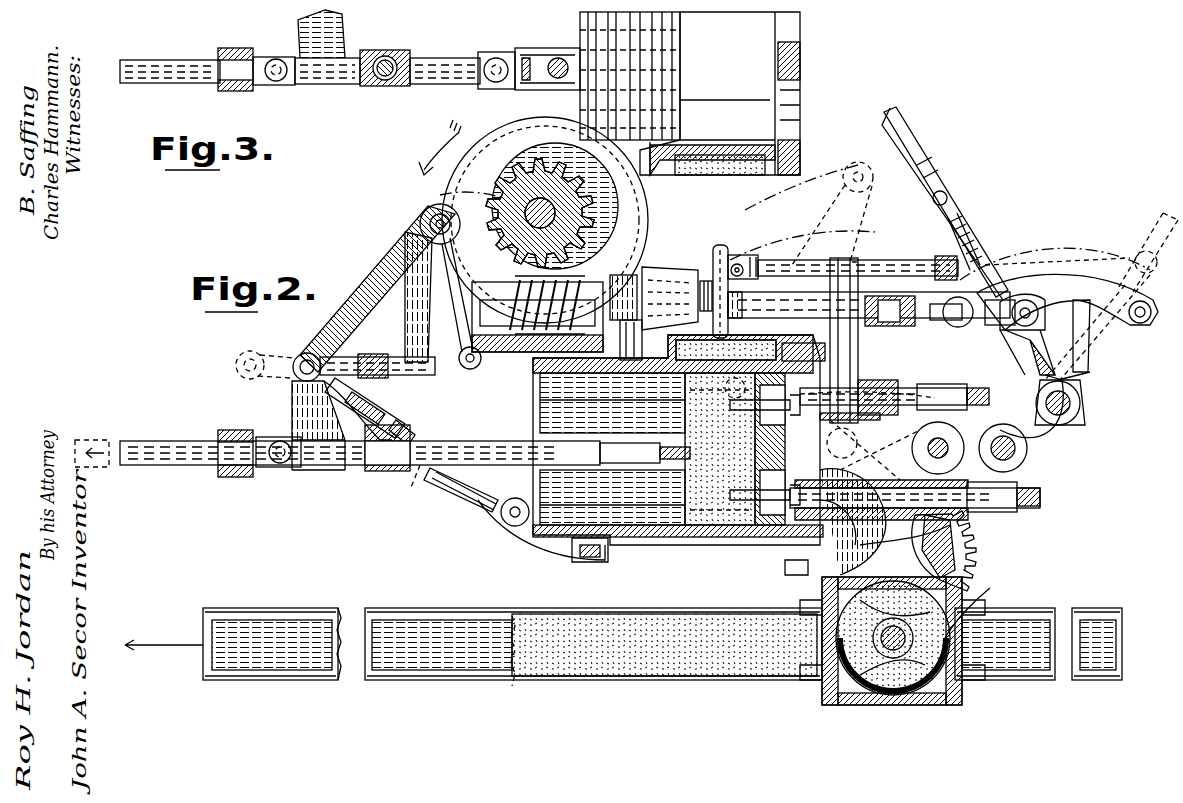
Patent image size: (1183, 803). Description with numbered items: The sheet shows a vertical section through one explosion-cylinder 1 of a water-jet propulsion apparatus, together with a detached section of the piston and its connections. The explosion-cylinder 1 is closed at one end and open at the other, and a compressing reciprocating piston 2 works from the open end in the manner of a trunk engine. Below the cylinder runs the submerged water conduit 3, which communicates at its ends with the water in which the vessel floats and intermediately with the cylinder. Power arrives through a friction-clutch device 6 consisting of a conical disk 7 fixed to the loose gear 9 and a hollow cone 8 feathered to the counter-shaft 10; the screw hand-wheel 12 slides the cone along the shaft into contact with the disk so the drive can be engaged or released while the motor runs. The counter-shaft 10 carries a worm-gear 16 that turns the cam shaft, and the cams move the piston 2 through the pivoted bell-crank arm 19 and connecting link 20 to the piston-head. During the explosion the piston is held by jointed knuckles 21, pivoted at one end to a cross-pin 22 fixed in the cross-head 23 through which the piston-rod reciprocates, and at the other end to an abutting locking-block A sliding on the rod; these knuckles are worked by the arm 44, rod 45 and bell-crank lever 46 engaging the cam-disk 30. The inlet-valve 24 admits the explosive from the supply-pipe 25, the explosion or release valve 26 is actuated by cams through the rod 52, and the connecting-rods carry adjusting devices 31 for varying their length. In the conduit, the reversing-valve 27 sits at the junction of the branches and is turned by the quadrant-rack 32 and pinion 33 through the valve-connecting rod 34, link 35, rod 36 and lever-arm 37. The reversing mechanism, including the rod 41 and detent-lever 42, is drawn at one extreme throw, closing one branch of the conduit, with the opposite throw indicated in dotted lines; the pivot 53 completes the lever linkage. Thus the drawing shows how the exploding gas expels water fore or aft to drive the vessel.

In FIG. 3, the explosion-cylinder 1 is at (720, 93).
In FIG. 2, the explosion-cylinder 1 is at (678, 450).
In FIG. 3, the compressing reciprocating piston 2 is at (630, 76).
In FIG. 2, the water conduit 3 is at (495, 608).
In FIG. 2, the friction-clutch device 6 is at (673, 254).
In FIG. 2, the conical disk 7 is at (640, 330).
In FIG. 2, the hollow cone 8 is at (677, 298).
In FIG. 2, the loose gear 9 is at (618, 312).
In FIG. 2, the counter-shaft 10 is at (869, 286).
In FIG. 2, the screw hand-wheel 12 is at (720, 247).
In FIG. 2, the worm-gear 16 is at (537, 314).
In FIG. 2, the pivoted bell-crank arm 19 is at (422, 297).
In FIG. 3, the connecting link 20 is at (530, 58).
In FIG. 3, the jointed knuckle 21 is at (389, 58).
In FIG. 3, the cross-pin 22 is at (276, 82).
In FIG. 2, the cross-pin 22 is at (278, 462).
In FIG. 3, the cross-head 23 is at (235, 78).
In FIG. 2, the cross-head 23 is at (235, 462).
In FIG. 2, the inlet-valve 24 is at (803, 340).
In FIG. 2, the supply-pipe 25 is at (860, 348).
In FIG. 2, the explosion or release valve 26 is at (817, 525).
In FIG. 2, the reversing-valve 27 is at (978, 602).
In FIG. 2, the cam-disk 30 is at (533, 220).
In FIG. 2, the adjusting device 31 is at (617, 362).
In FIG. 2, the quadrant-rack 32 is at (918, 551).
In FIG. 2, the pinion 33 is at (893, 691).
In FIG. 2, the valve-connecting rod 34 is at (720, 449).
In FIG. 2, the link 35 is at (597, 562).
In FIG. 2, the rod 36 is at (468, 490).
In FIG. 2, the lever-arm 37 is at (377, 289).
In FIG. 2, the rod 41 is at (858, 257).
In FIG. 2, the detent-lever 42 is at (945, 203).
In FIG. 3, the arm 44 is at (330, 34).
In FIG. 2, the arm 44 is at (302, 395).
In FIG. 2, the rod 45 is at (318, 355).
In FIG. 2, the bell-crank lever 46 is at (461, 303).
In FIG. 2, the rod 52 is at (942, 304).
In FIG. 2, the pivot 53 is at (1010, 326).
In FIG. 3, the abutting locking-block A is at (522, 86).
In FIG. 2, the abutting locking-block A is at (530, 465).